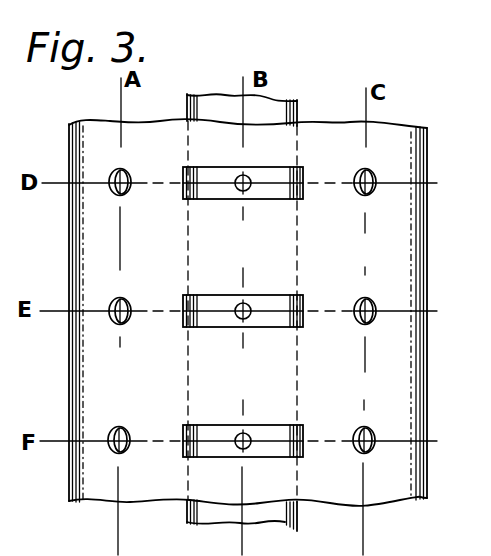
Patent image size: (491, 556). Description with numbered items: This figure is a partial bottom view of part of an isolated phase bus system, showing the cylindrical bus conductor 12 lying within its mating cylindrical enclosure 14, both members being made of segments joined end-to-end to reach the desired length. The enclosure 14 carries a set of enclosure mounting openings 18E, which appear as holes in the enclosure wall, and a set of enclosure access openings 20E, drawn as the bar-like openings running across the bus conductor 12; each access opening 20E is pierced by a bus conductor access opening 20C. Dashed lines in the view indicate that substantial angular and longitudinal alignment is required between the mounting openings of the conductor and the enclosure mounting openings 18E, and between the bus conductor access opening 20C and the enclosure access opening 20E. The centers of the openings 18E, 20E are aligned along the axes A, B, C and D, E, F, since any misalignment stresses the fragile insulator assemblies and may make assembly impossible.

The cylindrical bus conductor 12 is at (298, 108).
The cylindrical enclosure 14 is at (391, 143).
The enclosure mounting opening 18E is at (367, 197).
The bus conductor access opening 20C is at (238, 176).
The enclosure access opening 20E is at (257, 200).